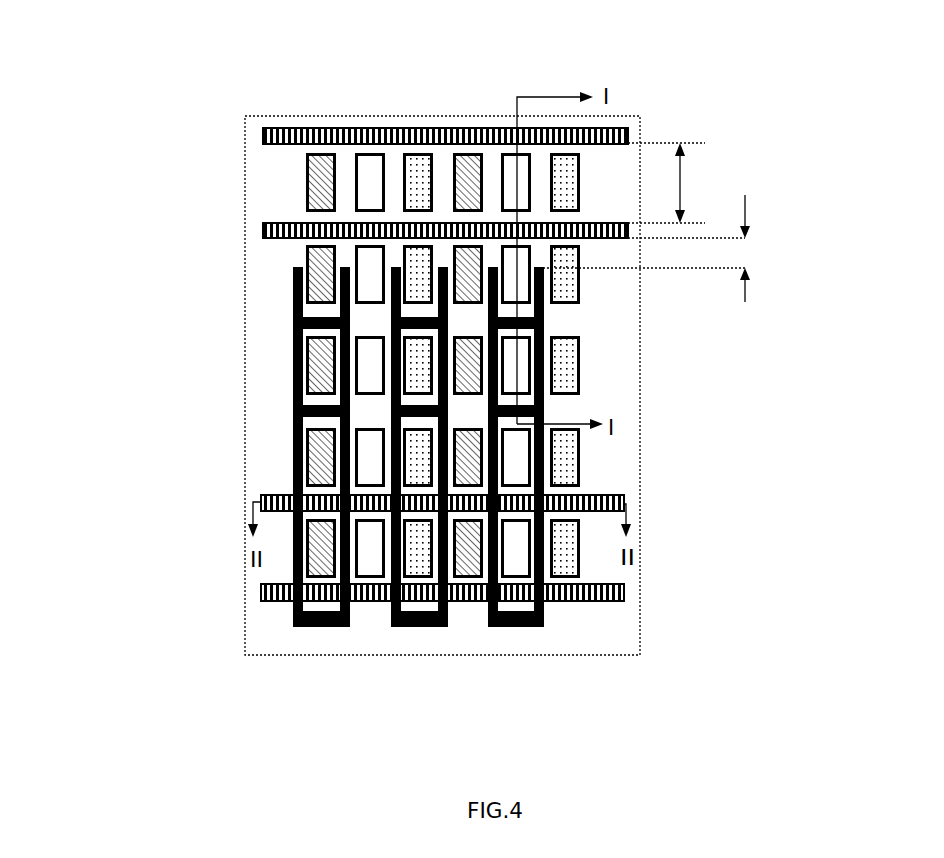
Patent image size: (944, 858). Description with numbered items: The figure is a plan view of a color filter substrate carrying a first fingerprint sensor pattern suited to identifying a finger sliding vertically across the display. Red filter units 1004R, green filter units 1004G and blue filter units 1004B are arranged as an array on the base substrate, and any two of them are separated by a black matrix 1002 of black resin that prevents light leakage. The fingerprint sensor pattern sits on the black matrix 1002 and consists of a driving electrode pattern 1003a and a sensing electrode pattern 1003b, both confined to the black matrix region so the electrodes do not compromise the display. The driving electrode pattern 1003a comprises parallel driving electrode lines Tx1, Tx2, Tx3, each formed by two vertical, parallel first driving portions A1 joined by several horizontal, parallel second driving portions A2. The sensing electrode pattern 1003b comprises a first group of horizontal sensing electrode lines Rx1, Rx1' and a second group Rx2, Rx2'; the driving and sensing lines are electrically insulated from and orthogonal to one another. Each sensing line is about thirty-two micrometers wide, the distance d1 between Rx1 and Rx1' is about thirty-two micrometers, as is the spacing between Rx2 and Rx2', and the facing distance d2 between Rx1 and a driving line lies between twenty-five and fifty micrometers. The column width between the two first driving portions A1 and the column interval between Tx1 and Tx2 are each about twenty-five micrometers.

The black matrix 1002 is at (602, 322).
The driving electrode pattern 1003a is at (548, 708).
The sensing electrode pattern 1003b is at (165, 153).
The red filter units 1004R is at (320, 182).
The green filter units 1004G is at (368, 175).
The blue filter units 1004B is at (421, 172).
The first driving portion A1 is at (296, 350).
The second driving portion A2 is at (303, 418).
The sensing electrode line Rx1' is at (405, 144).
The sensing electrode line Rx1 is at (405, 240).
The sensing electrode line Rx2' is at (402, 511).
The sensing electrode line Rx2 is at (402, 603).
The driving electrode line Tx1 is at (320, 627).
The driving electrode line Tx2 is at (418, 627).
The driving electrode line Tx3 is at (517, 627).
The distance d1 is at (677, 183).
The facing distance d2 is at (664, 248).